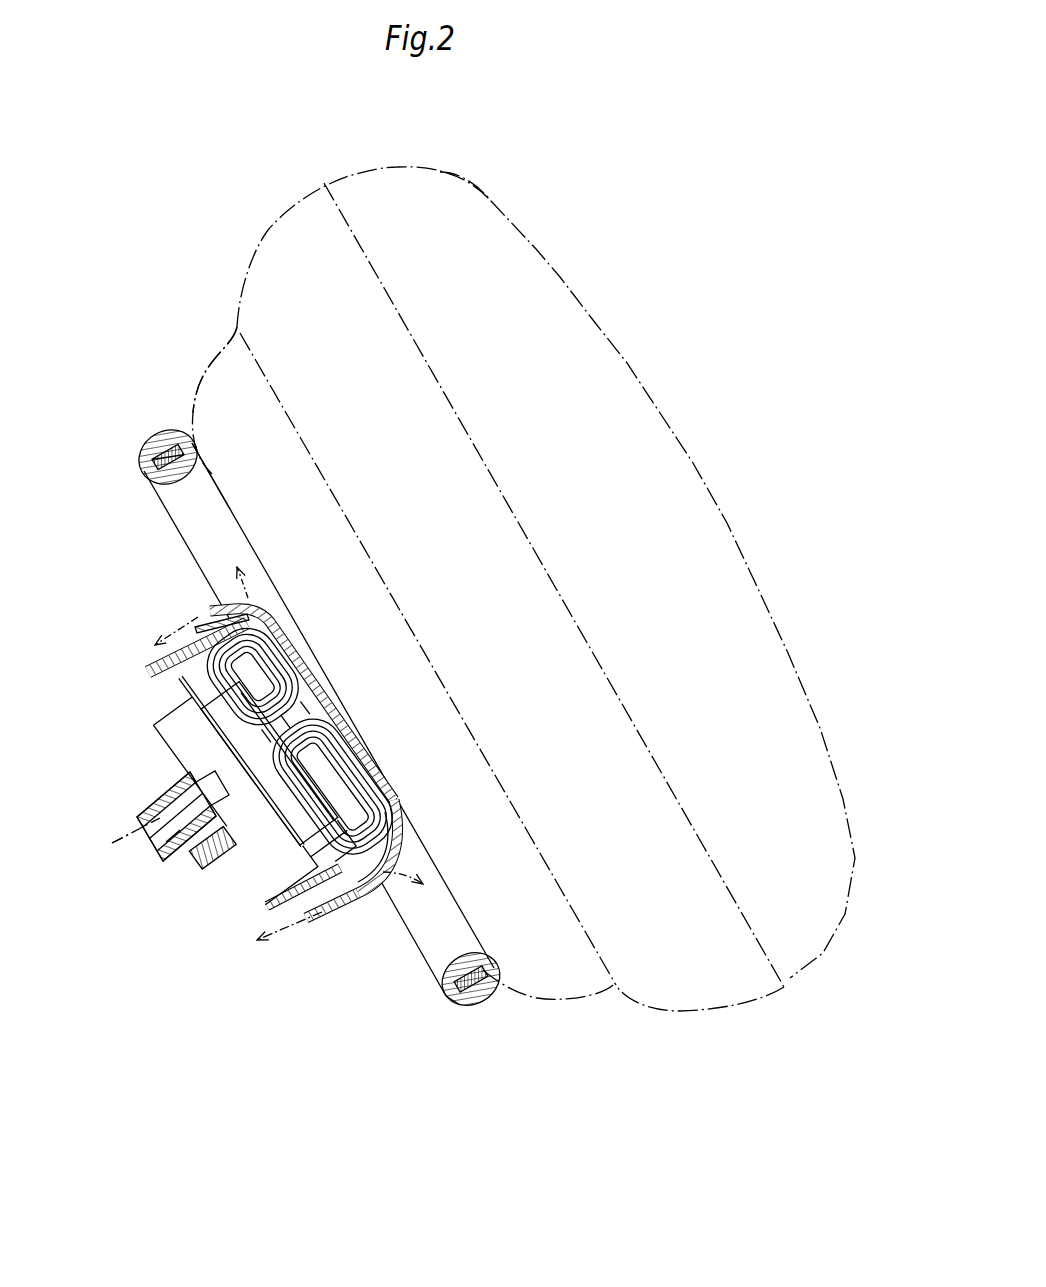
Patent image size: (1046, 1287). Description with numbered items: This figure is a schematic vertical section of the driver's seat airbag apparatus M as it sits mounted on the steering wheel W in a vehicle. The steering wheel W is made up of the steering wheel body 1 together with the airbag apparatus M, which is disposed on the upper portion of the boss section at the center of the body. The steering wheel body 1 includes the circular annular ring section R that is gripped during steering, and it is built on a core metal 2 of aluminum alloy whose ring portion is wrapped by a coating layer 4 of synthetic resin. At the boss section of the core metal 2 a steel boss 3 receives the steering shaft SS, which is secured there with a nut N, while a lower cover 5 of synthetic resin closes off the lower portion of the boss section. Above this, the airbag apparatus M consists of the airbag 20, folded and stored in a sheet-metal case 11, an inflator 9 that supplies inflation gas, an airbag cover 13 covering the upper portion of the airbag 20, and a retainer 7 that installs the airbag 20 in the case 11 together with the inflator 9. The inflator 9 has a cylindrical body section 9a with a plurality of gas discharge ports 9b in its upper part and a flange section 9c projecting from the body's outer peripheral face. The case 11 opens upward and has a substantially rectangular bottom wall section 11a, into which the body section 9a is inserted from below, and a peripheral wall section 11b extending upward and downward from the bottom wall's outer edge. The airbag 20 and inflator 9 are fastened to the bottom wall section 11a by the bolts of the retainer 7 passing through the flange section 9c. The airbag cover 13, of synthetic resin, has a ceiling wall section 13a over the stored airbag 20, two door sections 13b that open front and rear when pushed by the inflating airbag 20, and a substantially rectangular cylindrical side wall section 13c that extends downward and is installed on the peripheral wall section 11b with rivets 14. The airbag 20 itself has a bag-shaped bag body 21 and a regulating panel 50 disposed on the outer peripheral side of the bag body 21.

The steering wheel body 1 is at (412, 1032).
The core metal 2 is at (480, 1010).
The boss 3 is at (137, 817).
The coating layer 4 is at (462, 1010).
The lower cover 5 is at (268, 947).
The retainer 7 is at (203, 700).
The inflator 9 is at (204, 825).
The body section 9a is at (213, 746).
The gas discharge ports 9b is at (353, 770).
The flange section 9c is at (203, 878).
The case 11 is at (356, 905).
The bottom wall section 11a is at (290, 886).
The peripheral wall section 11b is at (384, 856).
The airbag cover 13 is at (311, 823).
The ceiling wall section 13a is at (378, 887).
The door sections 13b is at (300, 644).
The side wall section 13c is at (323, 908).
The rivets 14 is at (163, 650).
The airbag 20 is at (588, 204).
The bag body 21 is at (486, 197).
The regulating panel 50 is at (275, 257).
The ring section R is at (238, 507).
The nut N is at (183, 855).
The steering shaft SS is at (131, 850).
The airbag apparatus M is at (218, 913).
The steering wheel W is at (297, 990).